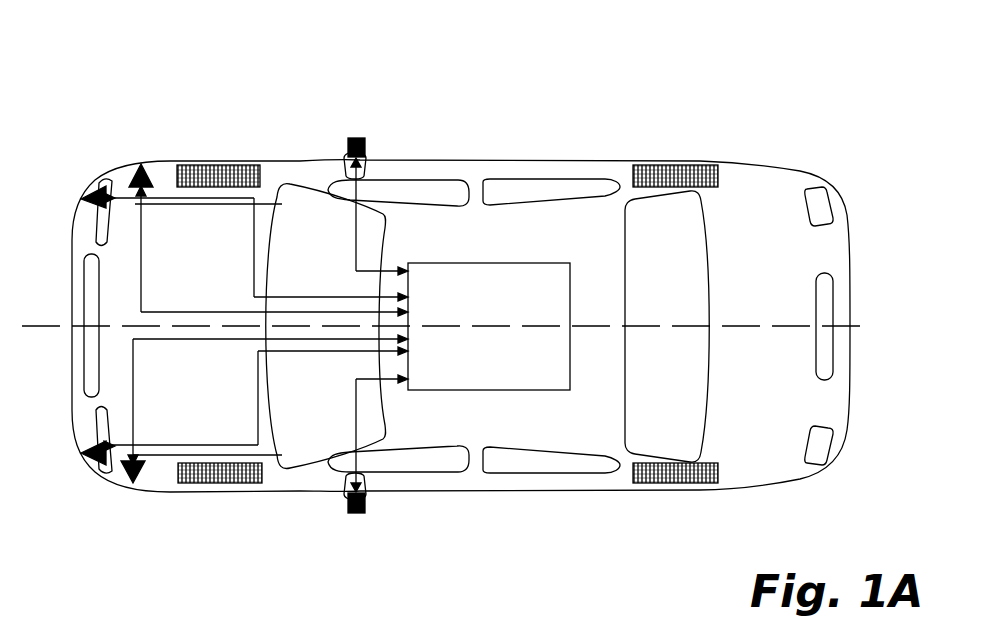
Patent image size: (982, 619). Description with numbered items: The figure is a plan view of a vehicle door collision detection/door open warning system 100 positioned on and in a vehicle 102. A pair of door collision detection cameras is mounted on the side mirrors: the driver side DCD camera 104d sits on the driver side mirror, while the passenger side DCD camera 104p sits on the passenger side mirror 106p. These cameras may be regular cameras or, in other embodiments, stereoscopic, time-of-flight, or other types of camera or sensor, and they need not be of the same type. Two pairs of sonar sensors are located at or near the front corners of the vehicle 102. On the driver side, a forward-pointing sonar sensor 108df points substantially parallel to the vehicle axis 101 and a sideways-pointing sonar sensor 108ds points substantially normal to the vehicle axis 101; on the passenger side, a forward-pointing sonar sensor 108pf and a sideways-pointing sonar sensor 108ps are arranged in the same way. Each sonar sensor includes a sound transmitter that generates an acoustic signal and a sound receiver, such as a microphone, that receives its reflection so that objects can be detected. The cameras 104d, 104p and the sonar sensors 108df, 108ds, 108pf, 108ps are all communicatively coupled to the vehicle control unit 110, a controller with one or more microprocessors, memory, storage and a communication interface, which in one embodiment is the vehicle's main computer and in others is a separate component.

The door collision detection/door open warning (DCD/DOW) system 100 is at (131, 44).
The vehicle axis 101 is at (922, 326).
The vehicle 102 is at (800, 170).
The passenger side DCD camera 104p is at (367, 152).
The driver side DCD camera 104d is at (367, 497).
The passenger side mirror 106p is at (346, 174).
The forward-pointing sonar sensor (passenger side) 108pf is at (95, 198).
The sideways-pointing sonar sensor (passenger side) 108ps is at (140, 165).
The forward-pointing sonar sensor (driver side) 108df is at (95, 450).
The sideways-pointing sonar sensor (driver side) 108ds is at (133, 483).
The vehicle control unit (VCU) 110 is at (489, 326).